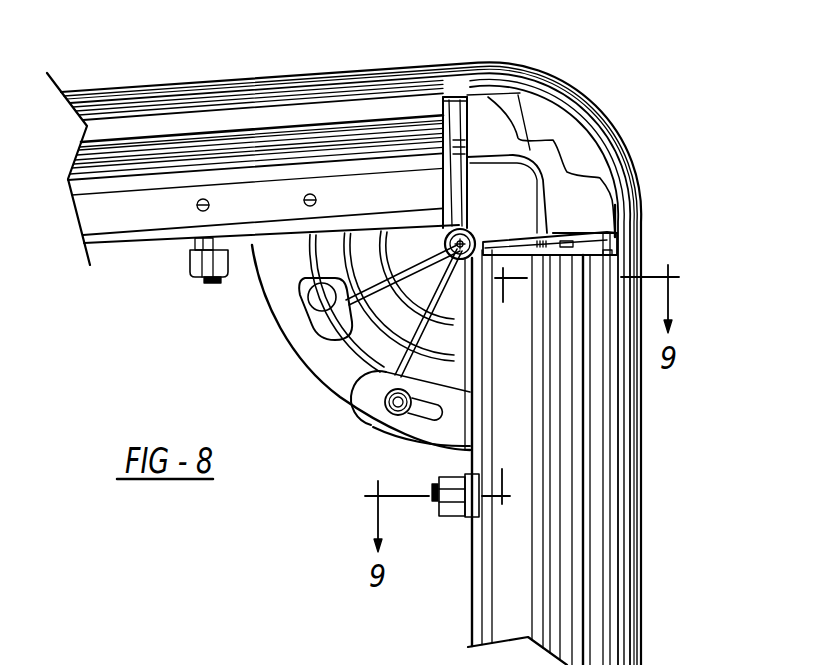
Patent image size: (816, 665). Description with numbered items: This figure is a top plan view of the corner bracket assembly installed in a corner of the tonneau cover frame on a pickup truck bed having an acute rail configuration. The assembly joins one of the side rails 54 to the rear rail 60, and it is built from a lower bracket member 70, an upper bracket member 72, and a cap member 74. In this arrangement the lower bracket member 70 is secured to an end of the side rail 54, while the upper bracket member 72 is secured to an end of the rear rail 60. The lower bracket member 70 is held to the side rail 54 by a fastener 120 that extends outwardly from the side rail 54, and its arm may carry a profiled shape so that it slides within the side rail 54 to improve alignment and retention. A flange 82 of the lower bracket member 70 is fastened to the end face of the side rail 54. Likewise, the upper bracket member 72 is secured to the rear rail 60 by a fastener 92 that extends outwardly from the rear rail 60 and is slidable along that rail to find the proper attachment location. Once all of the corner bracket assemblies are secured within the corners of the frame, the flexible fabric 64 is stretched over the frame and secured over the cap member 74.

The side rail 54 is at (510, 553).
The rear rail 60 is at (133, 130).
The flexible fabric 64 is at (557, 123).
The lower bracket member 70 is at (463, 307).
The upper bracket member 72 is at (283, 283).
The cap member 74 is at (486, 104).
The flange 82 is at (520, 252).
The fastener 92 is at (210, 289).
The fastener 120 is at (435, 501).